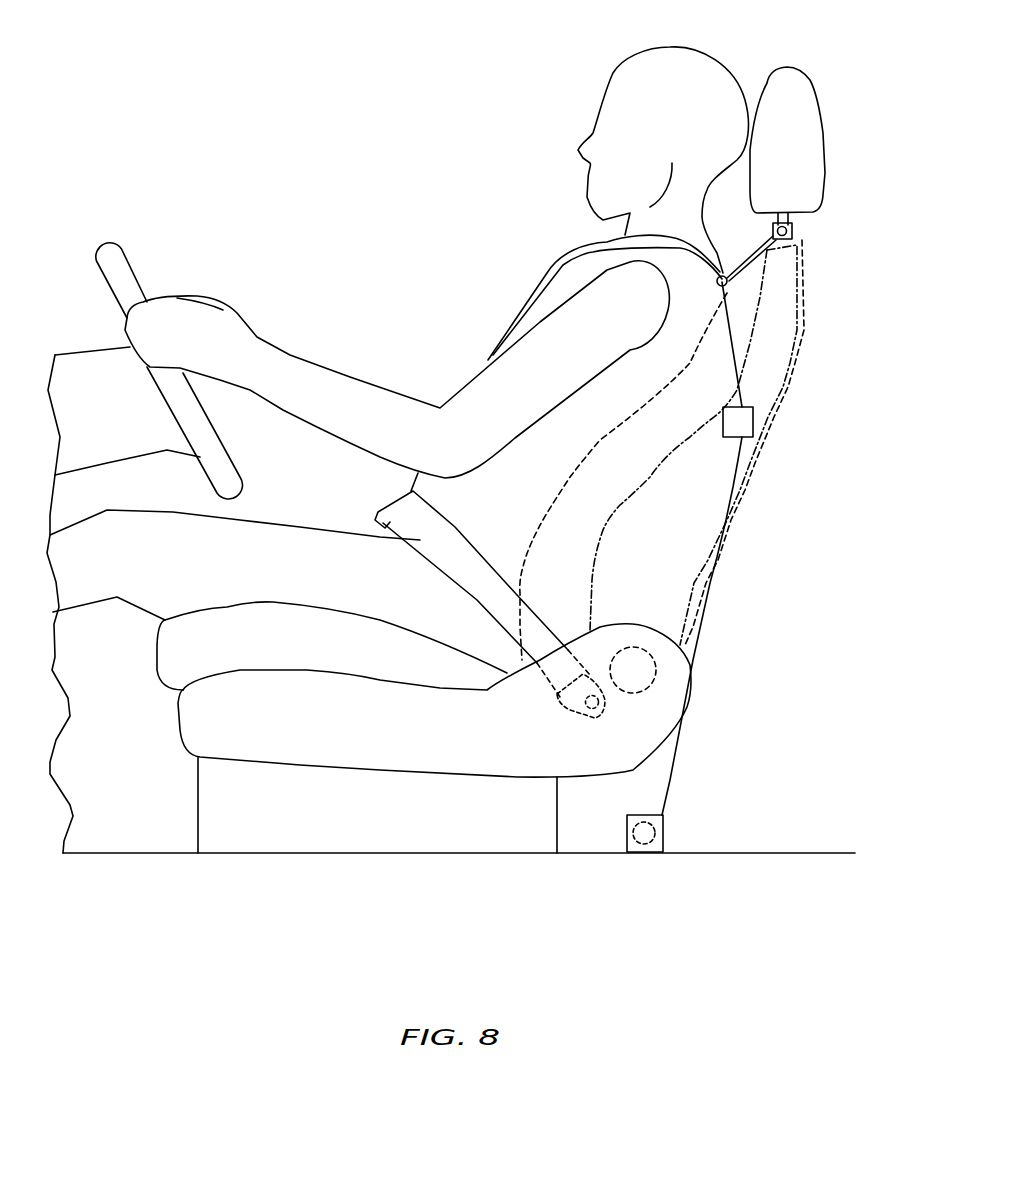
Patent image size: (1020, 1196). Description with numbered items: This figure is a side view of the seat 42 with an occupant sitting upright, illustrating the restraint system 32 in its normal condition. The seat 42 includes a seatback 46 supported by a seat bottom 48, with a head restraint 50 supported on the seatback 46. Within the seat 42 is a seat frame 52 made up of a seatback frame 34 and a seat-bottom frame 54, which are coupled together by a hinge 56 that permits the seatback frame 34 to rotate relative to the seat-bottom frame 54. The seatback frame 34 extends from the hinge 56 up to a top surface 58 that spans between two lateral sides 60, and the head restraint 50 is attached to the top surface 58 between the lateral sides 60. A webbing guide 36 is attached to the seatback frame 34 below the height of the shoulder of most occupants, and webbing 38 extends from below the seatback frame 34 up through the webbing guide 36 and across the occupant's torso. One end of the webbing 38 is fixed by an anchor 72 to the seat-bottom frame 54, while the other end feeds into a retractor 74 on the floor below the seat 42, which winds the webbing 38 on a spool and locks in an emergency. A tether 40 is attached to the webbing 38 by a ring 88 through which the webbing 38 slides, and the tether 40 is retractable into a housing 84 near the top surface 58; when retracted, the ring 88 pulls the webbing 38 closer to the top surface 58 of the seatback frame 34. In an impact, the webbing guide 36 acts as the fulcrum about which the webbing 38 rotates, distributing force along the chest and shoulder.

The restraint system 32 is at (699, 432).
The seatback frame 34 is at (803, 363).
The webbing guide 36 is at (754, 418).
The webbing 38 is at (570, 249).
The tether 40 is at (745, 258).
The seat 42 is at (390, 727).
The seatback 46 is at (807, 303).
The seat bottom 48 is at (155, 653).
The head restraint 50 is at (785, 62).
The seat frame 52 is at (694, 583).
The seat-bottom frame 54 is at (178, 730).
The hinge 56 is at (633, 695).
The top surface 58 is at (771, 220).
The lateral sides 60 is at (703, 542).
The anchor 72 is at (577, 710).
The retractor 74 is at (664, 828).
The housing 84 is at (794, 228).
The ring 88 is at (717, 286).